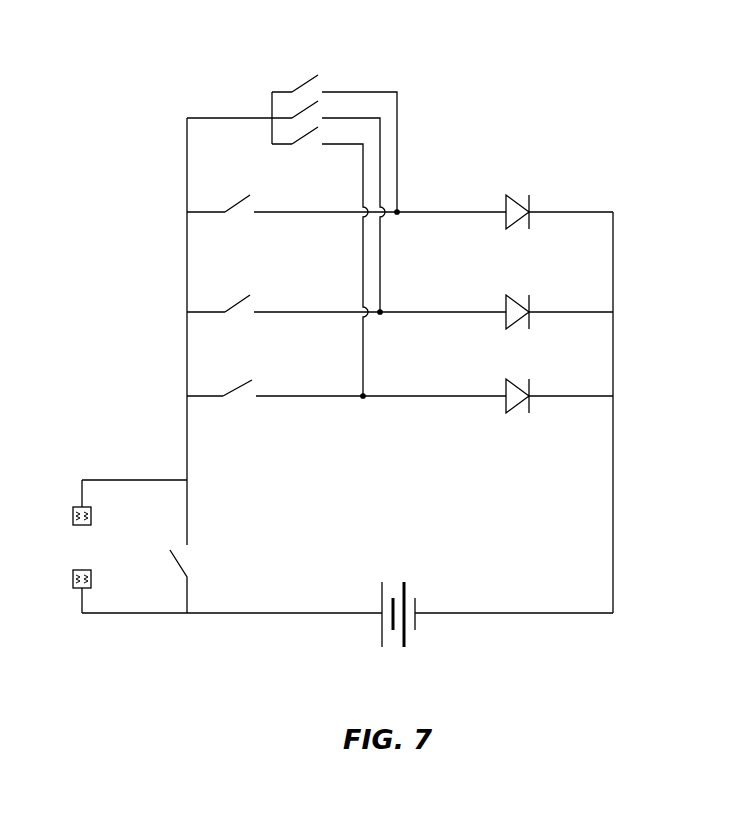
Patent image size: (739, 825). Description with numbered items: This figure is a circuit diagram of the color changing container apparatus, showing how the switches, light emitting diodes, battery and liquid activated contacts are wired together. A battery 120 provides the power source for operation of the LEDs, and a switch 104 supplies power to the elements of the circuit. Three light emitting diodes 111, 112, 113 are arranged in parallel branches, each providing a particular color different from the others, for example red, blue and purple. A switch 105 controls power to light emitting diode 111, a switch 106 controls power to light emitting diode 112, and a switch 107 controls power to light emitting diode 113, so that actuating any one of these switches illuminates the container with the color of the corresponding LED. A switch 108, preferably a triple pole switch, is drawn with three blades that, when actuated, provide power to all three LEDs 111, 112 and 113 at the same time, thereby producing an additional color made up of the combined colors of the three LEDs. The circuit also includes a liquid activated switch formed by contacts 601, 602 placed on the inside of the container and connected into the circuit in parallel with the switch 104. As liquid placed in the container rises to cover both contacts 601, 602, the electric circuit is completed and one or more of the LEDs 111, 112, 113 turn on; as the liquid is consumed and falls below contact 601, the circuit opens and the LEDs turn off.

The switch 104 is at (198, 562).
The switch 105 is at (240, 217).
The switch 106 is at (240, 317).
The switch 107 is at (245, 402).
The triple pole switch 108 is at (297, 77).
The light emitting diode 111 is at (513, 227).
The light emitting diode 112 is at (513, 327).
The light emitting diode 113 is at (513, 411).
The battery 120 is at (417, 578).
The contact 601 is at (55, 570).
The contact 602 is at (102, 578).